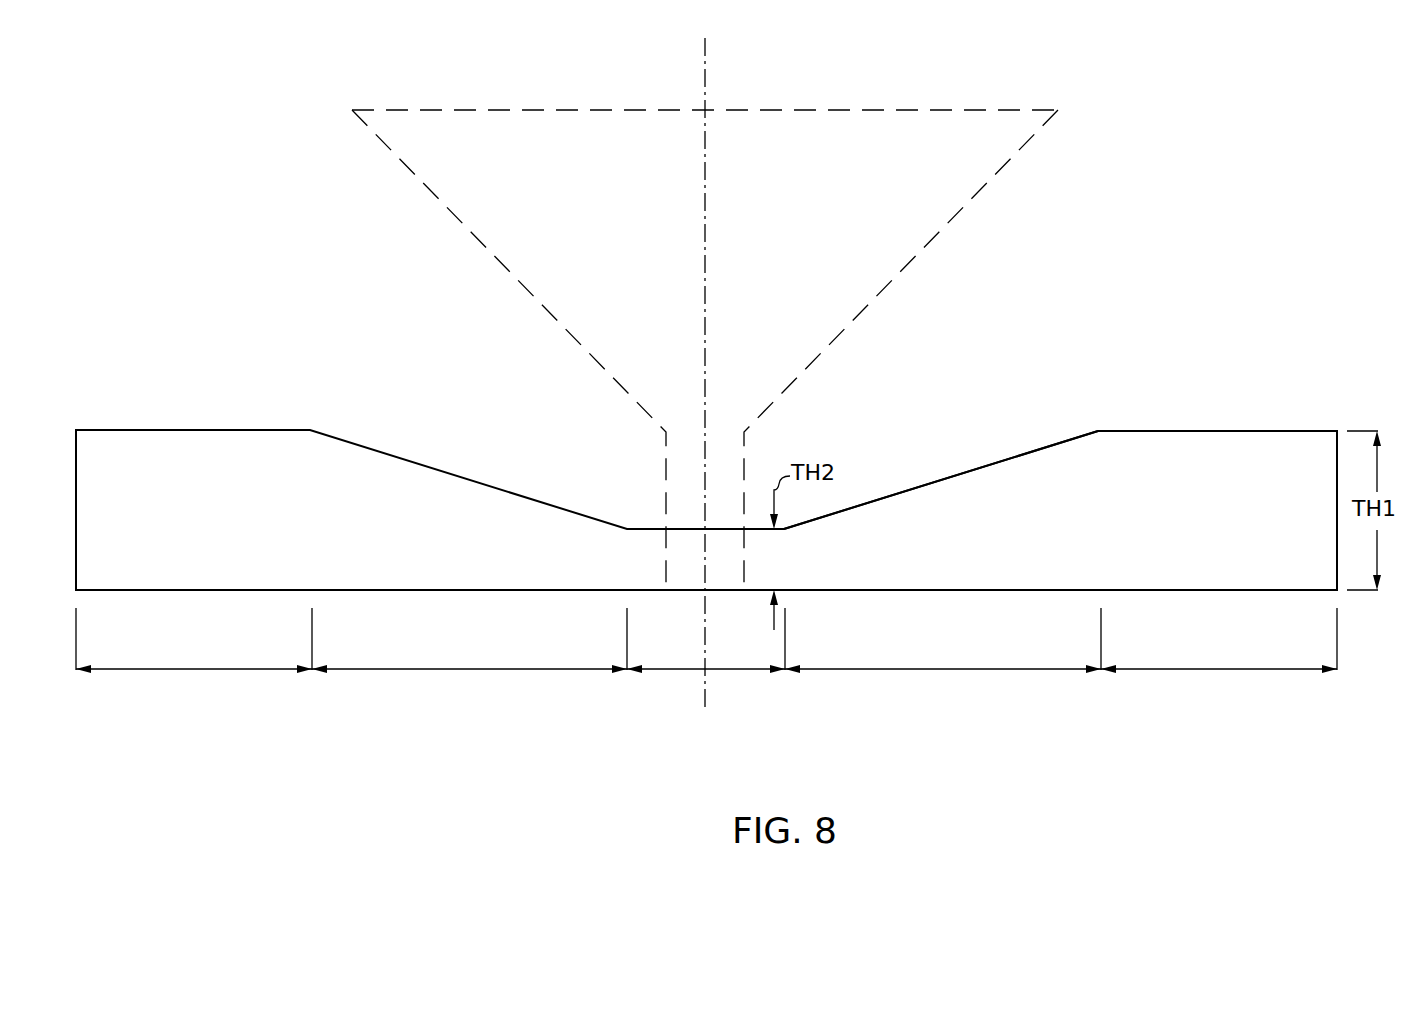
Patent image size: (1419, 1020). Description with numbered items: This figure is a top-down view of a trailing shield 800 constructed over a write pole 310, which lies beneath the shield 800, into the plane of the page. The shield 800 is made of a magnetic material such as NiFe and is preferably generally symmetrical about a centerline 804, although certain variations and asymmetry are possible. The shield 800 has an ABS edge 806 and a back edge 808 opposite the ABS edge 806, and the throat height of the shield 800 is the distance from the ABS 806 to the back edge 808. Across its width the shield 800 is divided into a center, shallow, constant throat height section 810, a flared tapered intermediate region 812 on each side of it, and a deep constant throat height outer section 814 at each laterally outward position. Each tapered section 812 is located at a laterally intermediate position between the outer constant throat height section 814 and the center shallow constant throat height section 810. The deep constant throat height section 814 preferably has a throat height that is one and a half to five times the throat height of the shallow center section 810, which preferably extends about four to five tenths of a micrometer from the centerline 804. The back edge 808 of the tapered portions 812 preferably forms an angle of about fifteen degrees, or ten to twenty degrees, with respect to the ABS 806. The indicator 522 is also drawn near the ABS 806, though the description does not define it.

The shield 800 is at (1200, 416).
The centerline 804 is at (705, 57).
The write pole 310 is at (878, 95).
The ABS edge 806 is at (1156, 590).
The back edge 808 is at (1010, 458).
The center shallow constant throat height section 810 is at (713, 669).
The flared tapered intermediate region 812 is at (438, 669).
The deep constant throat height outer section 814 is at (188, 669).
The direction indicator 522 is at (840, 626).